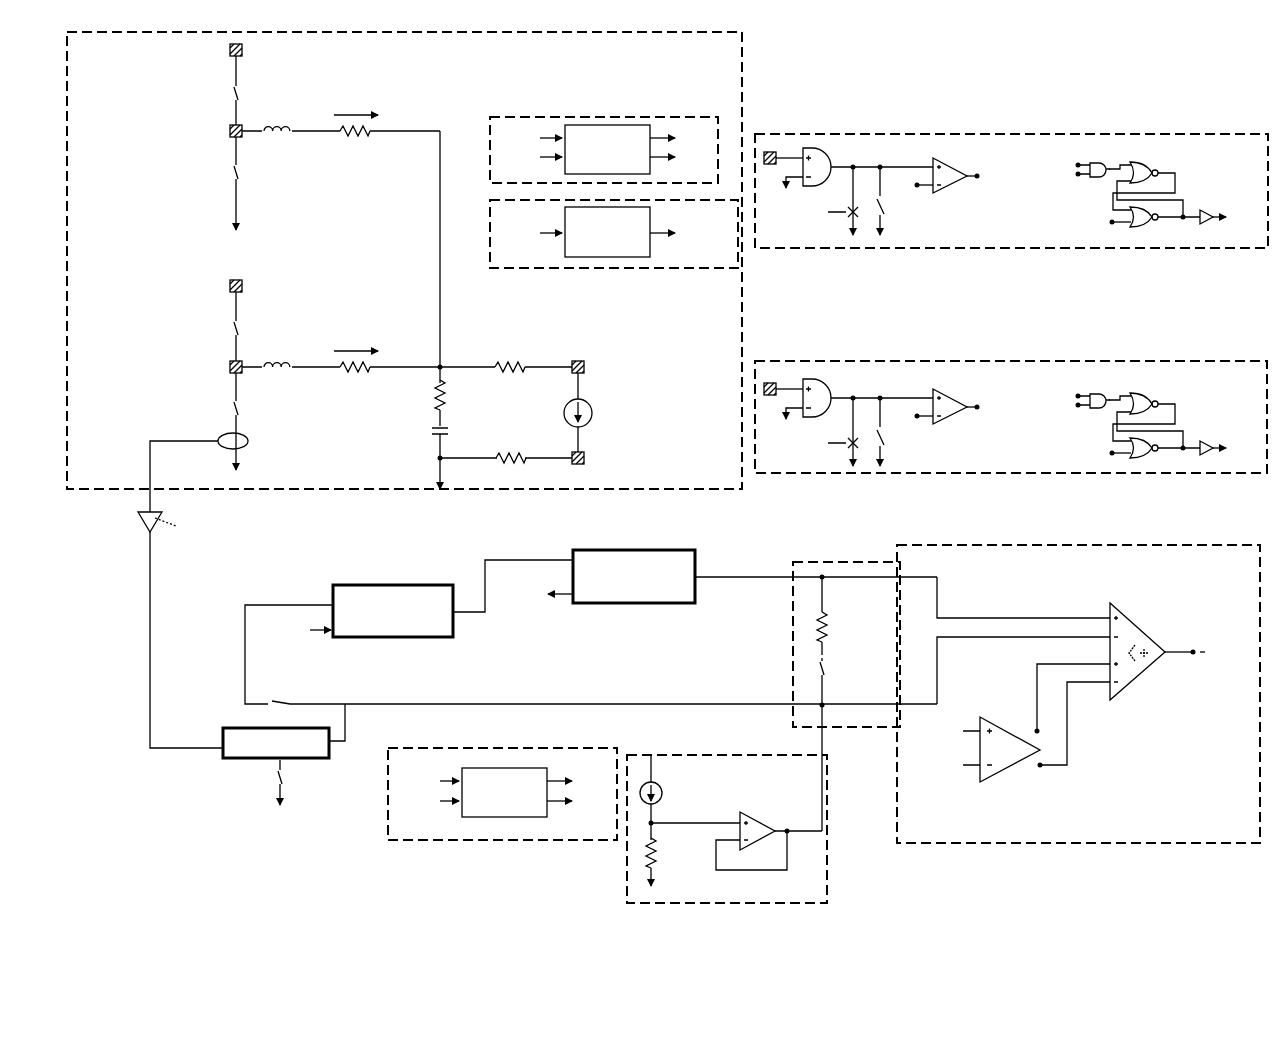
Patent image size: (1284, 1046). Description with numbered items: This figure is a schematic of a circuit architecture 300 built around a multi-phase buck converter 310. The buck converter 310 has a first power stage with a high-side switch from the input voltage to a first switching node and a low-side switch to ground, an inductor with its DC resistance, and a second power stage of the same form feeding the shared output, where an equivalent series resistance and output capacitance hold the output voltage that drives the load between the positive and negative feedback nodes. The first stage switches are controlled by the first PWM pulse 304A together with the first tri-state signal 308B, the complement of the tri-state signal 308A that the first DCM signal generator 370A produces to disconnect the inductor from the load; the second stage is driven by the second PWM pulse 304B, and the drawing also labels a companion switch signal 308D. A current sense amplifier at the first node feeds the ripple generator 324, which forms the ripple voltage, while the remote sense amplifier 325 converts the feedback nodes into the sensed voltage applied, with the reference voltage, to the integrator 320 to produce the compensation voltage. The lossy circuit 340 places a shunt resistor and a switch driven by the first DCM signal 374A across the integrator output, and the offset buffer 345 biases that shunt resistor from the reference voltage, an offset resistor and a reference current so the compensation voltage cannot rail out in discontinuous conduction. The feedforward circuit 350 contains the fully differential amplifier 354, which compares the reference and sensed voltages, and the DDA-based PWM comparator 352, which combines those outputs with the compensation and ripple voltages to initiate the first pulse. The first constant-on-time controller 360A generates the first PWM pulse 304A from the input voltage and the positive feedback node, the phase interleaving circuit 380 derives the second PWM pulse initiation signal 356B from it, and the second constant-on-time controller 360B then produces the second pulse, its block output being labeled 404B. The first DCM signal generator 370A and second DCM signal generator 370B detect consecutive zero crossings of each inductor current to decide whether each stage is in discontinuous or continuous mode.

The circuit architecture 300 is at (1178, 100).
The buck converter 310 is at (743, 88).
The first PWM pulse 304A is at (163, 328).
The second PWM pulse 304B is at (163, 93).
The first tri-state signal 308A is at (220, 782).
The first tri-state signal tri_N 1 308B is at (226, 327).
The switch driver 308D is at (226, 91).
The integrator 320 is at (634, 550).
The ripple generator 324 is at (313, 759).
The remote sense amplifier 325 is at (378, 585).
The lossy circuit 340 is at (840, 561).
The offset buffer 345 is at (827, 883).
The feedforward circuit 350 is at (1115, 545).
The DDA-based PWM comparator 352 is at (1138, 633).
The fully differential amplifier 354 is at (985, 719).
The second PWM pulse initiation signal 356B is at (1061, 175).
The first constant-on-time controller 360A is at (1013, 400).
The second constant-on-time controller 360B is at (950, 133).
The first DCM signal generator 370A is at (437, 748).
The second DCM signal generator 370B is at (595, 116).
The first DCM signal 374A is at (832, 663).
The phase interleaving circuit 380 is at (613, 269).
The output buffer of second phase 404B is at (1235, 218).